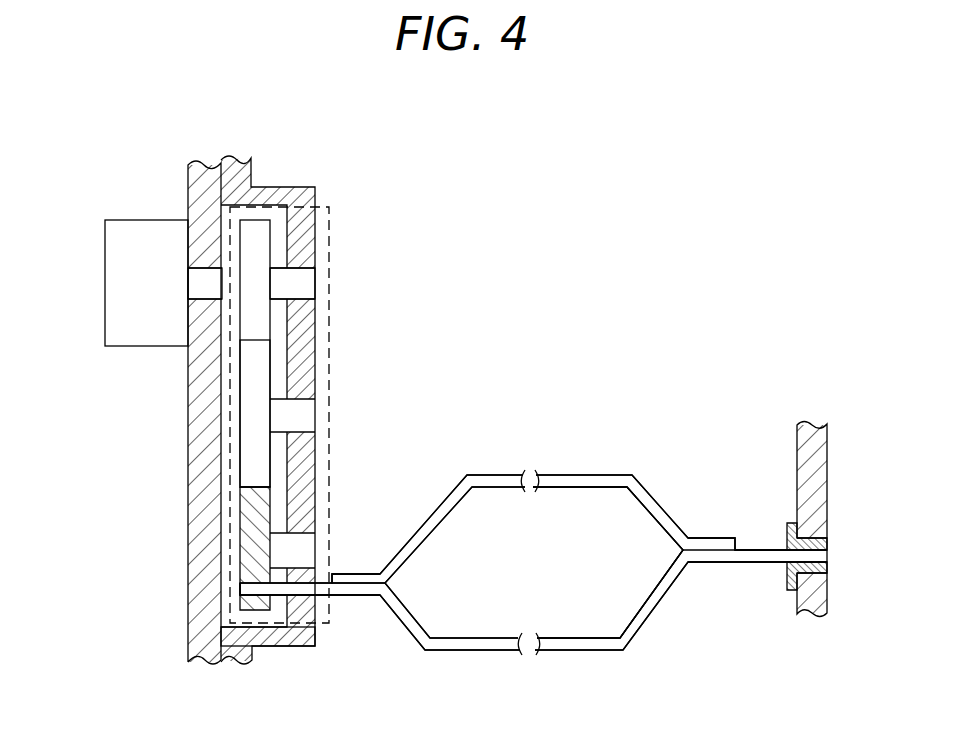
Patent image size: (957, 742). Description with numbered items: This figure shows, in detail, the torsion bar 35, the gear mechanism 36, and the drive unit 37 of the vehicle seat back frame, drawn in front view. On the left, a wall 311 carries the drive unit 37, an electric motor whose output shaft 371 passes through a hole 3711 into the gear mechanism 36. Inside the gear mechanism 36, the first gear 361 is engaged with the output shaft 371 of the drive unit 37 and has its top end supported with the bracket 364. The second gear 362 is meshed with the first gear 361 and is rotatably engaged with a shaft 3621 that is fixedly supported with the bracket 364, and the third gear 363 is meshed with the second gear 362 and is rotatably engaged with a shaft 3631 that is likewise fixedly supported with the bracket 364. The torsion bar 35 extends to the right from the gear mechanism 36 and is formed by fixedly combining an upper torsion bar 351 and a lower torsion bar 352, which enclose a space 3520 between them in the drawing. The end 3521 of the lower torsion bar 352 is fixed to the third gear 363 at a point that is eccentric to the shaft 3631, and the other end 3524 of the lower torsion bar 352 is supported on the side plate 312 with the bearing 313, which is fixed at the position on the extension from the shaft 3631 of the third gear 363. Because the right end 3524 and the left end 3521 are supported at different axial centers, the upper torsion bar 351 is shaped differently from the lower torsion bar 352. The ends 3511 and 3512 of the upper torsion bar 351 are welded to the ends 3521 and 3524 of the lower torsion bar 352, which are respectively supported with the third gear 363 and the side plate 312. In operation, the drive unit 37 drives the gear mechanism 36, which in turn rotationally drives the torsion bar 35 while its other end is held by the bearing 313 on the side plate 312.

The first wall portion 311 is at (197, 187).
The gear mechanism 36 is at (320, 208).
The first gear 361 is at (255, 258).
The second gear 362 is at (255, 372).
The top end 3711 is at (295, 285).
The output shaft 371 is at (205, 285).
The drive unit 37 is at (112, 322).
The shaft 3621 is at (303, 420).
The third gear 363 is at (260, 500).
The shaft 3631 is at (303, 548).
The bracket 364 is at (300, 647).
The torsion bar 35 is at (728, 466).
The upper torsion bar 351 is at (583, 476).
The lower torsion bar 352 is at (490, 637).
The space 3520 is at (610, 637).
The end 3511 is at (355, 576).
The end 3521 is at (360, 593).
The end 3512 is at (708, 545).
The other end 3524 is at (715, 557).
The side plate 312 is at (818, 465).
The bearing 313 is at (787, 578).